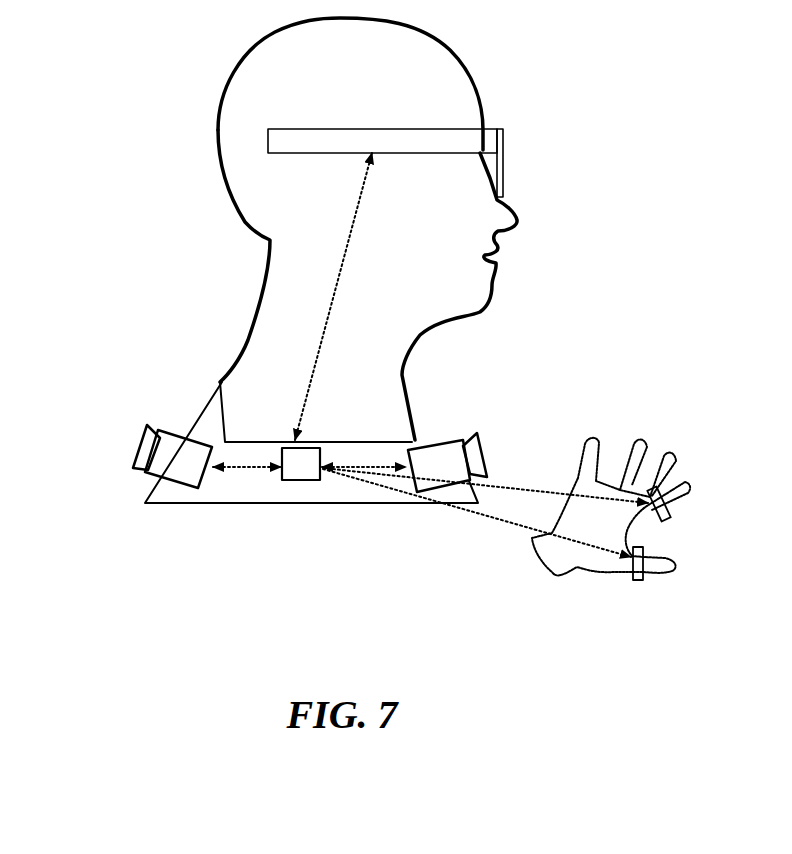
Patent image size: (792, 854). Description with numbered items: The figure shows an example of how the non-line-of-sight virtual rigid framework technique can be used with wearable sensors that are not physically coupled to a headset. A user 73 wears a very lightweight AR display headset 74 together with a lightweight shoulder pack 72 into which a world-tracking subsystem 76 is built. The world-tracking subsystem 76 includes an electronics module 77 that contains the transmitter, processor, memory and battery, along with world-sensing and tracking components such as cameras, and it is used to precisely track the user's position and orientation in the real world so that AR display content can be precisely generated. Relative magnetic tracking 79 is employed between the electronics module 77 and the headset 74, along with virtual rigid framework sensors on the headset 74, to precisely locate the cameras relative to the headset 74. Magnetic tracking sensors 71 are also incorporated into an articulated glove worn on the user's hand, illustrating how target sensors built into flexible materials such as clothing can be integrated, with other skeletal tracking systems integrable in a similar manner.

The magnetic tracking sensors 71 is at (672, 510).
The shoulder pack 72 is at (207, 412).
The user 73 is at (220, 112).
The AR display headset 74 is at (505, 155).
The world-tracking subsystem 76 is at (407, 472).
The electronics module 77 is at (315, 448).
The relative magnetic tracking 79 is at (362, 208).